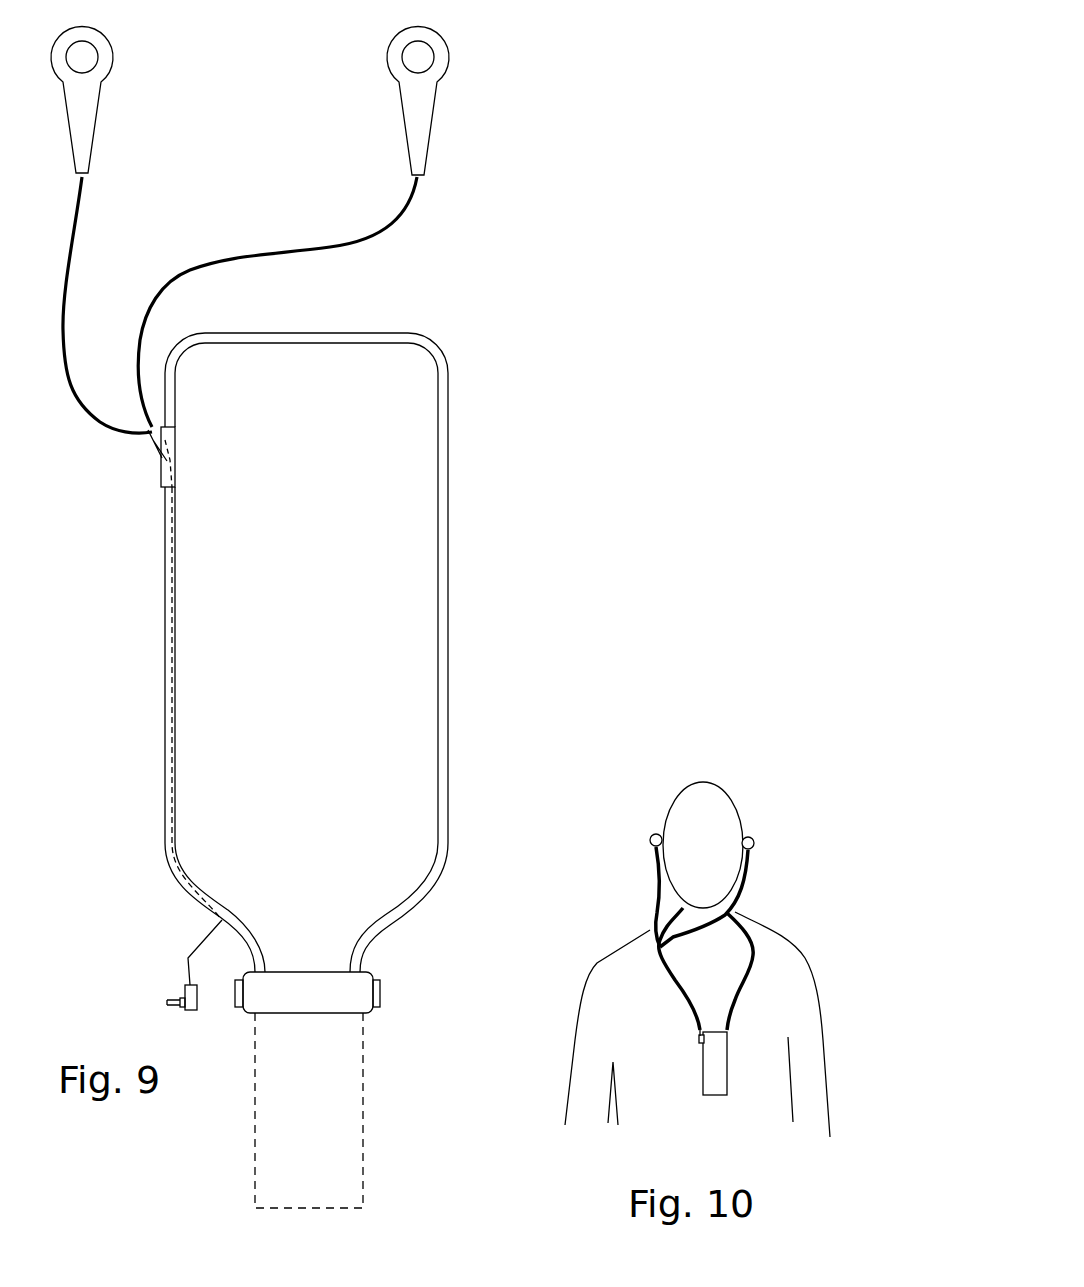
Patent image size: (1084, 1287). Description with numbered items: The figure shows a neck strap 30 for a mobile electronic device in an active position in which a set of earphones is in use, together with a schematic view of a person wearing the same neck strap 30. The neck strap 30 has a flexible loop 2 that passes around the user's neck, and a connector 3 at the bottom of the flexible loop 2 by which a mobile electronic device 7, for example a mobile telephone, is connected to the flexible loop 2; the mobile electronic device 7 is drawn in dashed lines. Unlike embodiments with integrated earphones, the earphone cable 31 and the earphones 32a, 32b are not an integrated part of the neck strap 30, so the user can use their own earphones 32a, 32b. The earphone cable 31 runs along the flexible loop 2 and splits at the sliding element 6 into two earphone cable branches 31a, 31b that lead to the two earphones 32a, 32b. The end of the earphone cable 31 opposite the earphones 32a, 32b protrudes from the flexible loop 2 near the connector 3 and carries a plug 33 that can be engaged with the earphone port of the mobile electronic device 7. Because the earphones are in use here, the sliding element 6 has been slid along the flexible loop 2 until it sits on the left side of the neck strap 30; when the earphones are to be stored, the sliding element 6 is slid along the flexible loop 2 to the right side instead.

In FIG. 9, the flexible loop 2 is at (443, 747).
In FIG. 10, the flexible loop 2 is at (728, 1020).
In FIG. 9, the connector 3 is at (367, 997).
In FIG. 9, the sliding element 6 is at (177, 443).
In FIG. 9, the mobile electronic device 7 is at (348, 1132).
In FIG. 10, the mobile electronic device 7 is at (723, 1065).
In FIG. 9, the neck strap 30 is at (560, 198).
In FIG. 9, the earphone cable 31 is at (170, 580).
In FIG. 10, the earphone cable 31 is at (697, 1035).
In FIG. 9, the earphone cable 31a is at (78, 398).
In FIG. 10, the earphone cable 31a is at (657, 907).
In FIG. 9, the earphone cable 31b is at (235, 257).
In FIG. 10, the earphone cable 31b is at (745, 895).
In FIG. 9, the earphone 32a is at (105, 53).
In FIG. 10, the earphone 32a is at (650, 837).
In FIG. 9, the earphone 32b is at (420, 107).
In FIG. 10, the earphone 32b is at (753, 842).
In FIG. 9, the plug 33 is at (168, 1002).
In FIG. 10, the plug 33 is at (703, 1042).